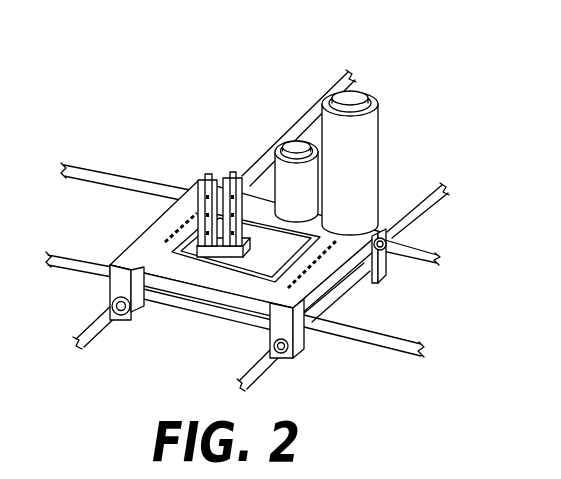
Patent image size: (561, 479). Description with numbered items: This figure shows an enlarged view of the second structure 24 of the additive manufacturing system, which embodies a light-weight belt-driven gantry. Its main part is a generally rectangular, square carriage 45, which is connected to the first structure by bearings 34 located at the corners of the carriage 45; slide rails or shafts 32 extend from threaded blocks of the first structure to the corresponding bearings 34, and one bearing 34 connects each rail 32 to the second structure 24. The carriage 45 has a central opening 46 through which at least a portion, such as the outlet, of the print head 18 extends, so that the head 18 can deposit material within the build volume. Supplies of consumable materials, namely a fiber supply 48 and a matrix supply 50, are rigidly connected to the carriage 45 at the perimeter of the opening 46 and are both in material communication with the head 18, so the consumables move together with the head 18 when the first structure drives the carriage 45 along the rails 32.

The second structure 24 is at (88, 49).
The print head 18 is at (220, 174).
The slide rails 32 is at (397, 336).
The bearings 34 is at (278, 327).
The carriage 45 is at (245, 251).
The central opening 46 is at (257, 253).
The fiber supply 48 is at (339, 199).
The matrix supply 50 is at (286, 207).